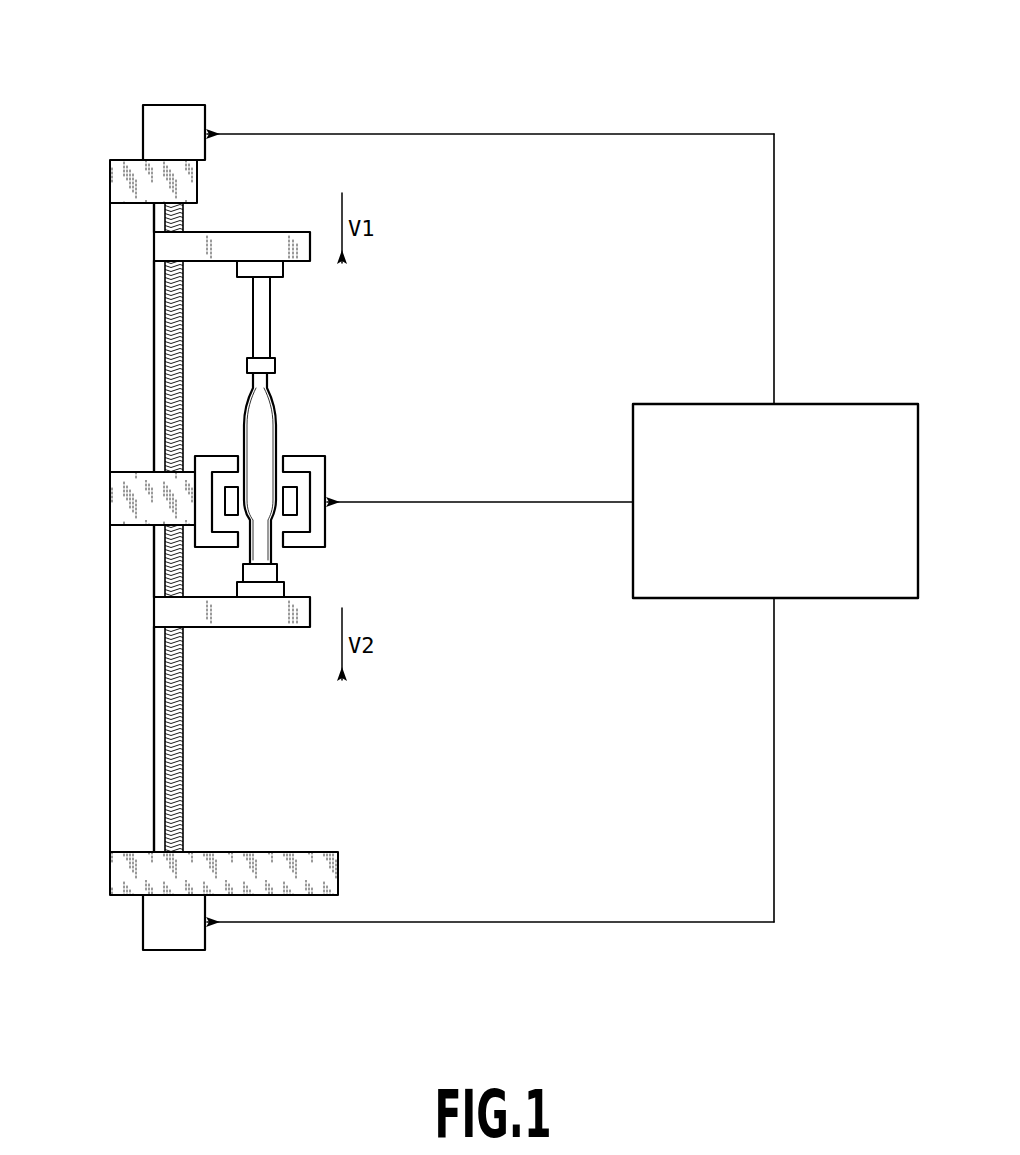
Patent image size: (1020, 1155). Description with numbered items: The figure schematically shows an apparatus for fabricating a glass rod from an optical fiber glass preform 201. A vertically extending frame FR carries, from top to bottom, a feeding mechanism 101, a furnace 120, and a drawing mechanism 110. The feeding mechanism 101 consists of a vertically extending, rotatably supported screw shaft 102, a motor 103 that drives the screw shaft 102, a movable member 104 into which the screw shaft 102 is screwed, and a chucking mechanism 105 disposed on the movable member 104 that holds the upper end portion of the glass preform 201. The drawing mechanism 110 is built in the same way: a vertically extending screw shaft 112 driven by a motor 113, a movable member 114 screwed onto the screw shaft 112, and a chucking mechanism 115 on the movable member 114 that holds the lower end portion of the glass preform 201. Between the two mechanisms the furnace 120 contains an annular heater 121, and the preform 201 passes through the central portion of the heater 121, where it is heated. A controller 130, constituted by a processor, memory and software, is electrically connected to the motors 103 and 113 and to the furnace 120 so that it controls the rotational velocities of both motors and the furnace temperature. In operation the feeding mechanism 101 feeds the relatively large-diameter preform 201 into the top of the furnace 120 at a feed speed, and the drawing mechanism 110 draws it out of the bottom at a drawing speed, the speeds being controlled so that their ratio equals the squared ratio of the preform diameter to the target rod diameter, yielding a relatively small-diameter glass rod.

The feeding mechanism 101 is at (315, 328).
The screw shaft 102 is at (165, 318).
The motor 103 is at (173, 105).
The movable member 104 is at (263, 245).
The chucking mechanism 105 is at (243, 268).
The drawing mechanism 110 is at (315, 762).
The screw shaft 112 is at (165, 750).
The motor 113 is at (173, 950).
The movable member 114 is at (262, 615).
The chucking mechanism 115 is at (281, 590).
The furnace 120 is at (320, 468).
The annular heater 121 is at (290, 507).
The controller 130 is at (862, 404).
The optical fiber glass preform 201 is at (277, 408).
The frame FR is at (121, 625).